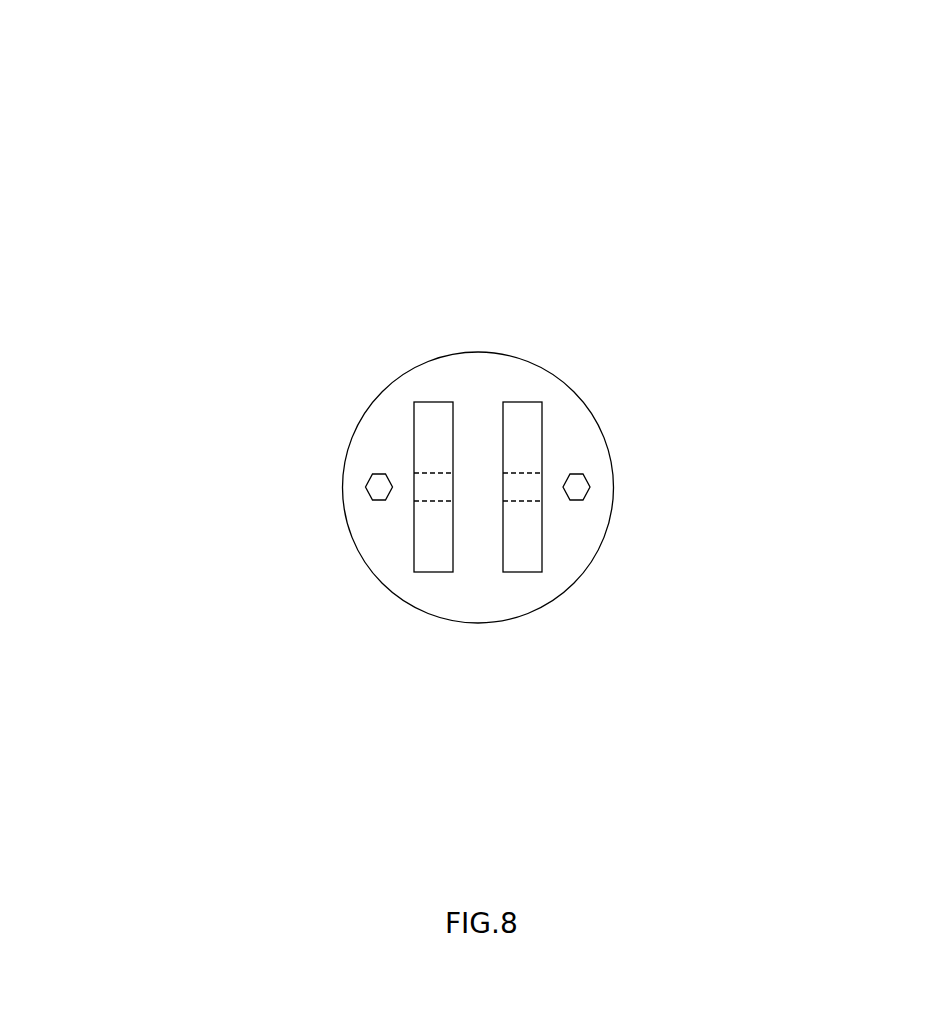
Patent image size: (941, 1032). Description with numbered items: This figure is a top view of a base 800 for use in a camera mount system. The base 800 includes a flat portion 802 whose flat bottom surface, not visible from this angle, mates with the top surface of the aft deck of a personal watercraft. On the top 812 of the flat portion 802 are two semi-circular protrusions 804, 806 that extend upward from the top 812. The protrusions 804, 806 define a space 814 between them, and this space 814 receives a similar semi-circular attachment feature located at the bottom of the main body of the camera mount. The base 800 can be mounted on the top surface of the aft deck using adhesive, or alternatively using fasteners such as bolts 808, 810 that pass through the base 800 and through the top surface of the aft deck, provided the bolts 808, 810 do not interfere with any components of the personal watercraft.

The base 800 is at (928, 45).
The flat portion 802 is at (552, 363).
The semi-circular protrusion 804 is at (415, 430).
The semi-circular protrusion 806 is at (543, 433).
The bolt 808 is at (367, 494).
The bolt 810 is at (590, 486).
The top 812 is at (567, 552).
The space 814 is at (478, 376).